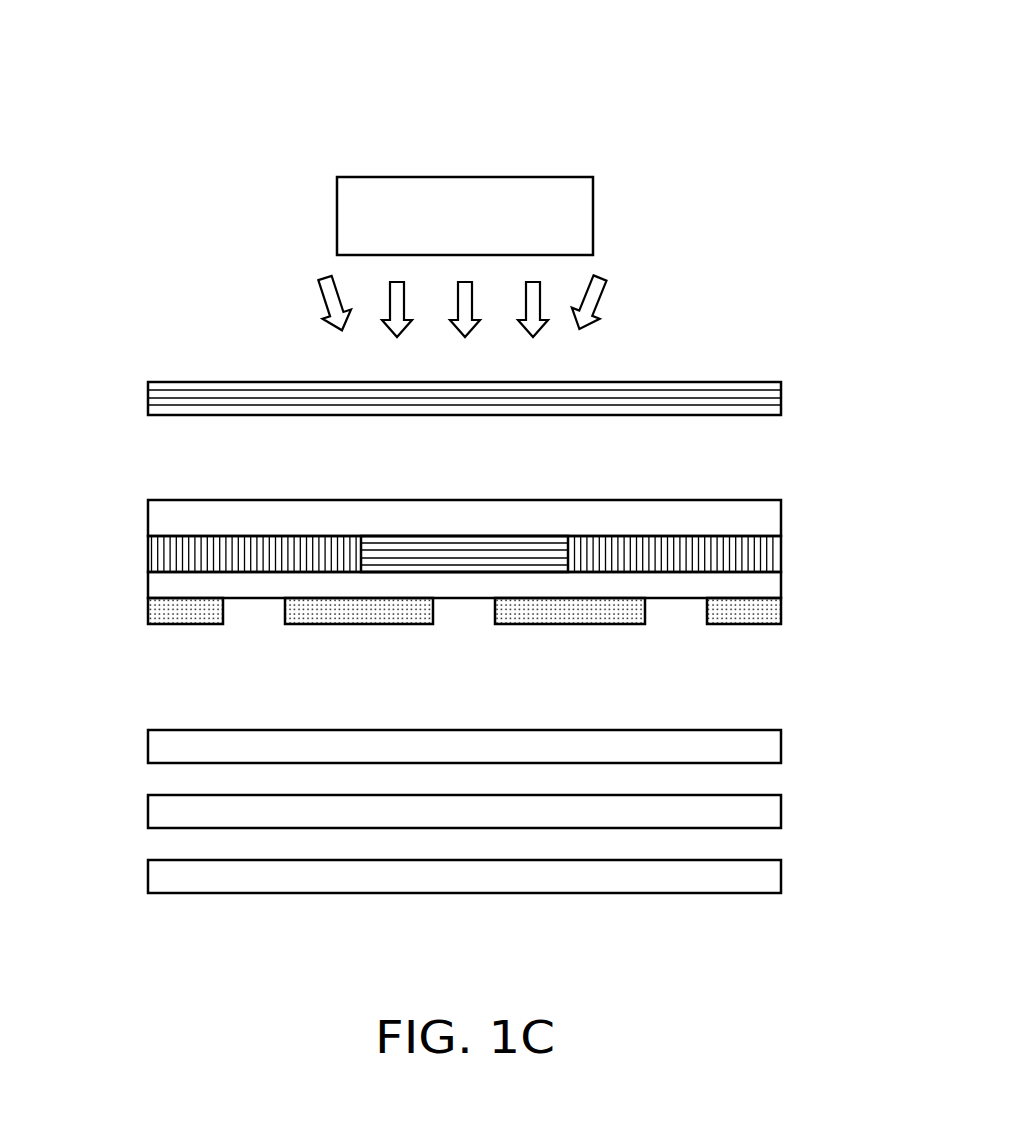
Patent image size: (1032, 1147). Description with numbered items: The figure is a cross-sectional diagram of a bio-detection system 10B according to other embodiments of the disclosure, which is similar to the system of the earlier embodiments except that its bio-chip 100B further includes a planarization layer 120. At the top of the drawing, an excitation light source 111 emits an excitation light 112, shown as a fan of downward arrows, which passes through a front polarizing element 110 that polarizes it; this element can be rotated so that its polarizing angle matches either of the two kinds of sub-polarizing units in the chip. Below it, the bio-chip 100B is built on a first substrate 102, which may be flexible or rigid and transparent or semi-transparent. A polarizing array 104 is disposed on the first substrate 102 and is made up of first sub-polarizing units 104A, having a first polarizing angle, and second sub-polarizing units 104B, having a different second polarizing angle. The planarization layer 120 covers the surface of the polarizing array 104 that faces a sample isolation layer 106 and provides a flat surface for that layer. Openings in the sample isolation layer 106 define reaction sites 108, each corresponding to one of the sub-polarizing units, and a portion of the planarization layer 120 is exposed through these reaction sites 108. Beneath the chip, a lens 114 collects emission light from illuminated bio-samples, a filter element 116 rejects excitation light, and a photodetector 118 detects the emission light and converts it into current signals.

The bio-detection system 10B is at (148, 77).
The bio-chip 100B is at (792, 552).
The first substrate 102 is at (148, 520).
The polarizing array 104 is at (770, 3).
The first sub-polarizing units 104A is at (148, 555).
The second sub-polarizing units 104B is at (463, 545).
The sample isolation layer 106 is at (148, 610).
The reaction sites 108 is at (675, 621).
The front polarizing element 110 is at (148, 400).
The excitation light source 111 is at (337, 215).
The excitation light 112 is at (310, 298).
The lens 114 is at (148, 747).
The filter element 116 is at (148, 812).
The photodetector 118 is at (148, 877).
The planarization layer 120 is at (148, 585).